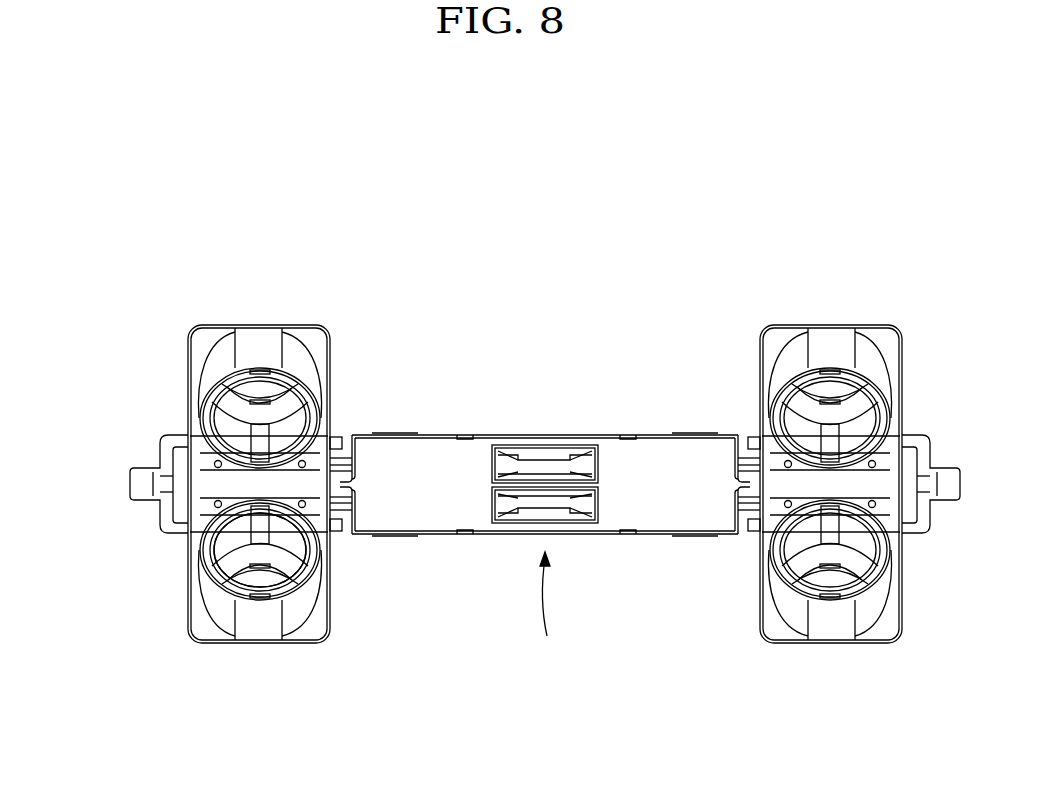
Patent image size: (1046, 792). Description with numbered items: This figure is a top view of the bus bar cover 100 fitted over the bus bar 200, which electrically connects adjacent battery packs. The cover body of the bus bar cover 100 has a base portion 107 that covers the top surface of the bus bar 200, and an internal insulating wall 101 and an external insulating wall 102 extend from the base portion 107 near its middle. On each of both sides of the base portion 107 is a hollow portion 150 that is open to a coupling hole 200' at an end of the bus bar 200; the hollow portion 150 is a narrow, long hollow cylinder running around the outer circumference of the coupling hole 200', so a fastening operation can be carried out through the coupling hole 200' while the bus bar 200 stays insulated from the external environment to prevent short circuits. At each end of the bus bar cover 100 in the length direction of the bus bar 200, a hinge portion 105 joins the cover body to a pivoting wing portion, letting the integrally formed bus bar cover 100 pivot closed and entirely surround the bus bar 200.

The bus bar cover 100 is at (140, 525).
The bus bar 200 is at (501, 486).
The coupling hole 200' is at (244, 610).
The hollow portion 150 is at (303, 363).
The base portion 107 is at (410, 463).
The internal insulating wall 101 is at (528, 483).
The external insulating wall 102 is at (562, 443).
The hinge portion 105 is at (951, 476).